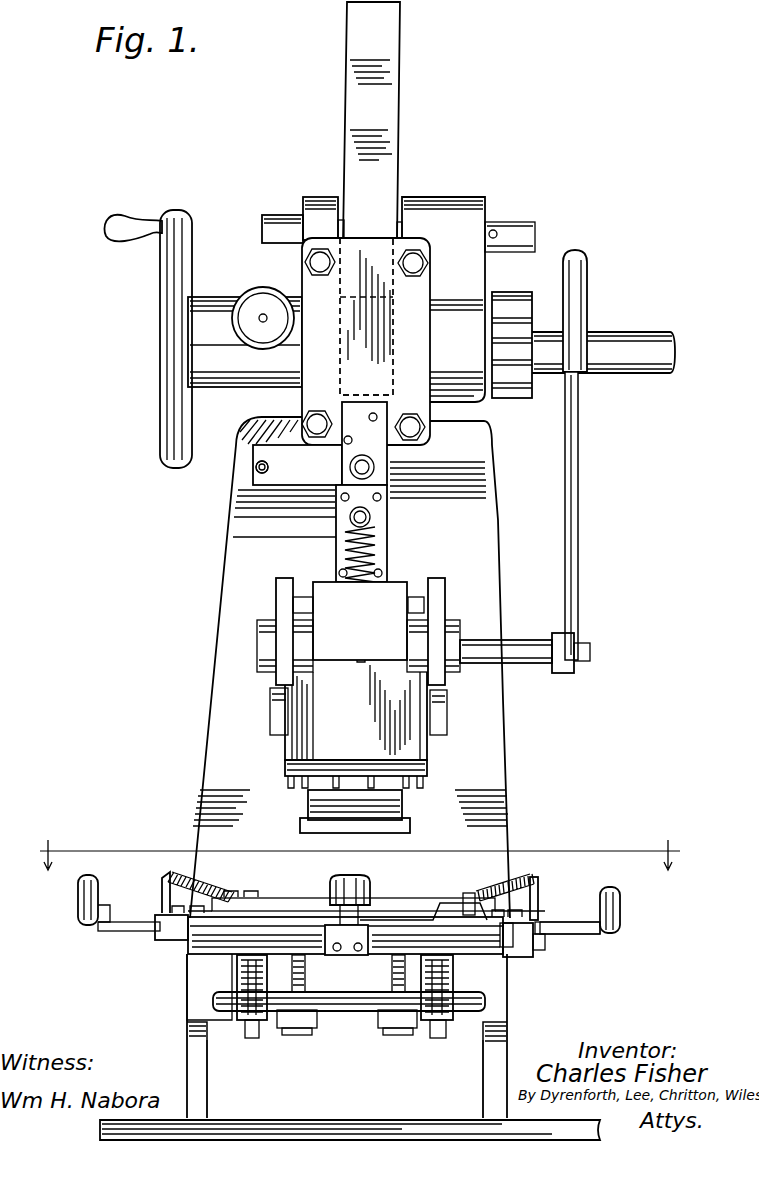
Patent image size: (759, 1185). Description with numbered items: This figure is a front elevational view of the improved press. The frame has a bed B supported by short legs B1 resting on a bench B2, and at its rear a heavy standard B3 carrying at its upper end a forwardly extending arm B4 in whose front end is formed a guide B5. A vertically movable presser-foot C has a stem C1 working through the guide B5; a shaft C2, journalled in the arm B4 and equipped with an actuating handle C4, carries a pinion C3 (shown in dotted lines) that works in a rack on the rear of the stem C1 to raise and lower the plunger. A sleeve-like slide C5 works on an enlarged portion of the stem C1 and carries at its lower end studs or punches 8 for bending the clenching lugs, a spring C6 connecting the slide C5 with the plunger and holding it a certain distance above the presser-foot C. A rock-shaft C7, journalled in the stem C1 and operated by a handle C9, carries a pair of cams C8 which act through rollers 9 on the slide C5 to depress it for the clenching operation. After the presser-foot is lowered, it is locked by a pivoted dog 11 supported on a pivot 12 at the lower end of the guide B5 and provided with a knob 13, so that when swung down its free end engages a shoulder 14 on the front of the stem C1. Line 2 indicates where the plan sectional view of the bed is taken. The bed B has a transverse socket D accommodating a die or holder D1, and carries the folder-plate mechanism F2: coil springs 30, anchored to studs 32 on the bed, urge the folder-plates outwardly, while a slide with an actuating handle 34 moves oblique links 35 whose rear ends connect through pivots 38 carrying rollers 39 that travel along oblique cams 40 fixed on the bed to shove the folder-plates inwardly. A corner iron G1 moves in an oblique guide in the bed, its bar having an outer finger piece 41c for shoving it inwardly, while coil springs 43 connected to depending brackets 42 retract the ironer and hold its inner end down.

The stem C1 is at (390, 112).
The forwardly extending arm B4 is at (450, 205).
The actuating handle C4 is at (162, 266).
The pinion C3 is at (350, 322).
The guide B5 is at (366, 341).
The shaft C2 is at (645, 343).
The handle C9 is at (582, 503).
The knob 13 is at (250, 470).
The pivot 12 is at (350, 464).
The pivoted member or dog 11 is at (290, 478).
The shoulder 14 is at (342, 488).
The spring C6 is at (375, 546).
The cams C8 is at (282, 592).
The rock-shaft C7 is at (515, 652).
The standard B3 is at (214, 640).
The rollers 9 is at (270, 710).
The sleeve-like plunger or slide C5 is at (410, 752).
The studs, dies or punches 8 is at (334, 788).
The presser-foot C is at (412, 828).
The line 2 is at (360, 846).
The finger pieces 41c is at (646, 914).
The oblique guide members or cams 40 is at (176, 926).
The studs 32 is at (162, 880).
The coil springs 30 is at (180, 912).
The socket D is at (358, 922).
The actuating handle 34 is at (342, 882).
The oblique links 35 is at (285, 908).
The mechanism for actuating the folder-plates F2 is at (366, 905).
The pivots 38 is at (466, 893).
The rollers 39 is at (226, 952).
The corner iron G1 is at (570, 915).
The die or holder D1 is at (540, 942).
The bed B is at (510, 992).
The short legs B1 is at (505, 1050).
The depending brackets 42 is at (215, 1000).
The coil springs 43 is at (305, 970).
The bench B2 is at (360, 1118).